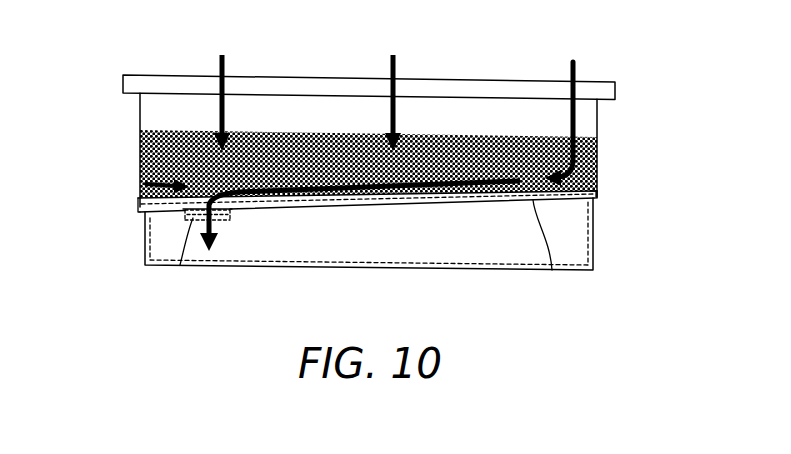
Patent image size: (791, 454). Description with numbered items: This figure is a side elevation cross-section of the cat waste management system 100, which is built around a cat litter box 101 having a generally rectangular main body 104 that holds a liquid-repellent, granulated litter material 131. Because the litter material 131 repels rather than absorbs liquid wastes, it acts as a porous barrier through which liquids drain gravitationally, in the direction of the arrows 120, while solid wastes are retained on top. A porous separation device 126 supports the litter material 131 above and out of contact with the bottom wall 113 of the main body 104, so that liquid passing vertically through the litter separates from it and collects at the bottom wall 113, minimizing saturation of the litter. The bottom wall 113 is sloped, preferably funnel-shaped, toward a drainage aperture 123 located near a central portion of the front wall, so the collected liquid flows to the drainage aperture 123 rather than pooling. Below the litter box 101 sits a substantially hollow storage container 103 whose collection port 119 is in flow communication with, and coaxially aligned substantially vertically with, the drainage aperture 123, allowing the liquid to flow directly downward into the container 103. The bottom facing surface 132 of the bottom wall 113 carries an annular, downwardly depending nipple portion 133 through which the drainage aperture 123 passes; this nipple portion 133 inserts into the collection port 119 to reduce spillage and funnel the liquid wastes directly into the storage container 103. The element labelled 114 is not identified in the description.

The cat waste management system 100 is at (70, 61).
The cat litter box 101 is at (590, 118).
The storage container 103 is at (393, 250).
The main body 104 is at (139, 122).
The bottom wall 113 is at (435, 203).
The inlet flow 114 is at (143, 210).
The collection port 119 is at (227, 217).
The arrows 120 is at (228, 113).
The drainage aperture 123 is at (230, 213).
The separation device 126 is at (594, 193).
The liquid-repellent litter material 131 is at (139, 165).
The bottom facing surface 132 is at (473, 203).
The nipple portion 133 is at (187, 218).